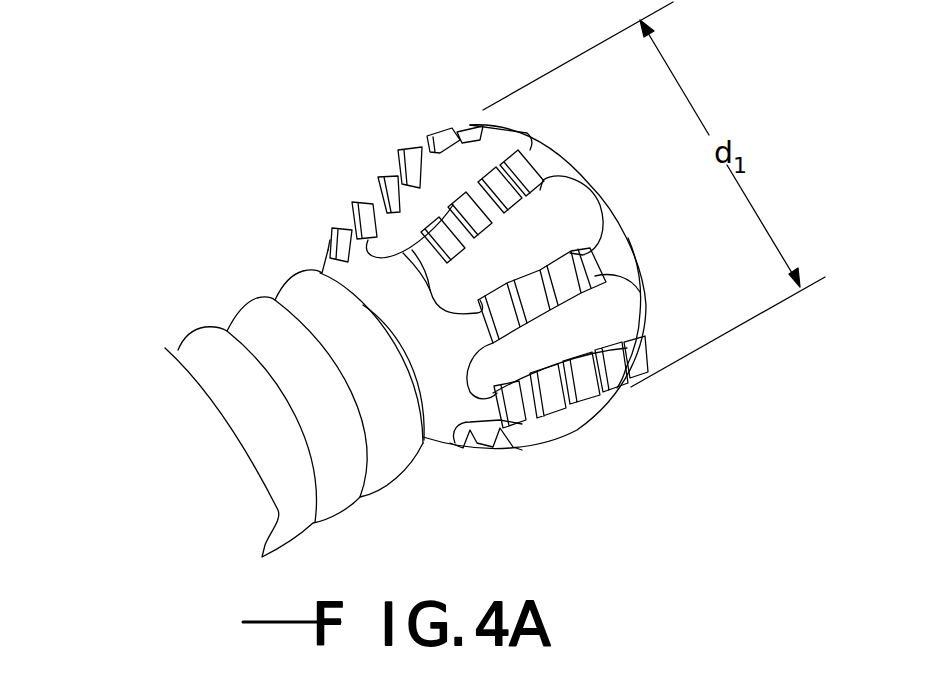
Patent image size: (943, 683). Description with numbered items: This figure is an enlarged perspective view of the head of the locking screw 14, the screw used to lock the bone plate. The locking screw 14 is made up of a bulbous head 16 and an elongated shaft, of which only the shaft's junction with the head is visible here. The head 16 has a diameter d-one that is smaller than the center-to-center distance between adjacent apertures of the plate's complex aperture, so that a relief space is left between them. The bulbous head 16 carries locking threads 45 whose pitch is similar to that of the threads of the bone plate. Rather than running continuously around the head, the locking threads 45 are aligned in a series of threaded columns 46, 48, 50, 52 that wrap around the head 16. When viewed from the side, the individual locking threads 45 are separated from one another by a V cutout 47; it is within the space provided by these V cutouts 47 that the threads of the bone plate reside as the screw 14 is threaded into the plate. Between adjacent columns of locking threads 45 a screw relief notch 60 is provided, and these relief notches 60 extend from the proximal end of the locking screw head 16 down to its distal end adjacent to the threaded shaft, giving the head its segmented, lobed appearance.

The locking screw 14 is at (207, 265).
The bulbous head 16 is at (630, 248).
The locking threads 45 is at (527, 447).
The threaded column 46 is at (478, 138).
The V cutout 47 is at (392, 190).
The threaded column 48 is at (592, 279).
The threaded column 50 is at (638, 343).
The threaded column 52 is at (580, 423).
The screw relief notch 60 is at (598, 318).